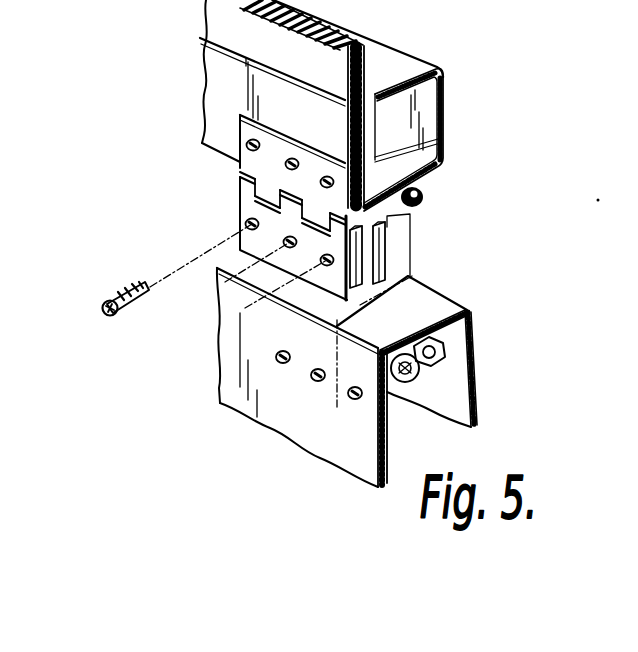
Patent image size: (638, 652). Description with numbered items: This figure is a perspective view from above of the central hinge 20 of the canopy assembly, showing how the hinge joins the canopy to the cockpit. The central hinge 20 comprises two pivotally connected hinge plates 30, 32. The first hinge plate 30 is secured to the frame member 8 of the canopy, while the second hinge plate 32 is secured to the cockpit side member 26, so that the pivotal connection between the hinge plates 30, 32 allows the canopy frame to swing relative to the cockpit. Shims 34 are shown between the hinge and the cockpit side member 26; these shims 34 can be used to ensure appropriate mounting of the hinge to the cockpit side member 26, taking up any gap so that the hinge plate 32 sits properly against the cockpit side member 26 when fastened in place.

The frame member 8 is at (444, 110).
The central hinge 20 is at (155, 144).
The cockpit side member 26 is at (460, 357).
The hinge plate 30 is at (203, 115).
The hinge plate 32 is at (240, 203).
The shims 34 is at (358, 243).